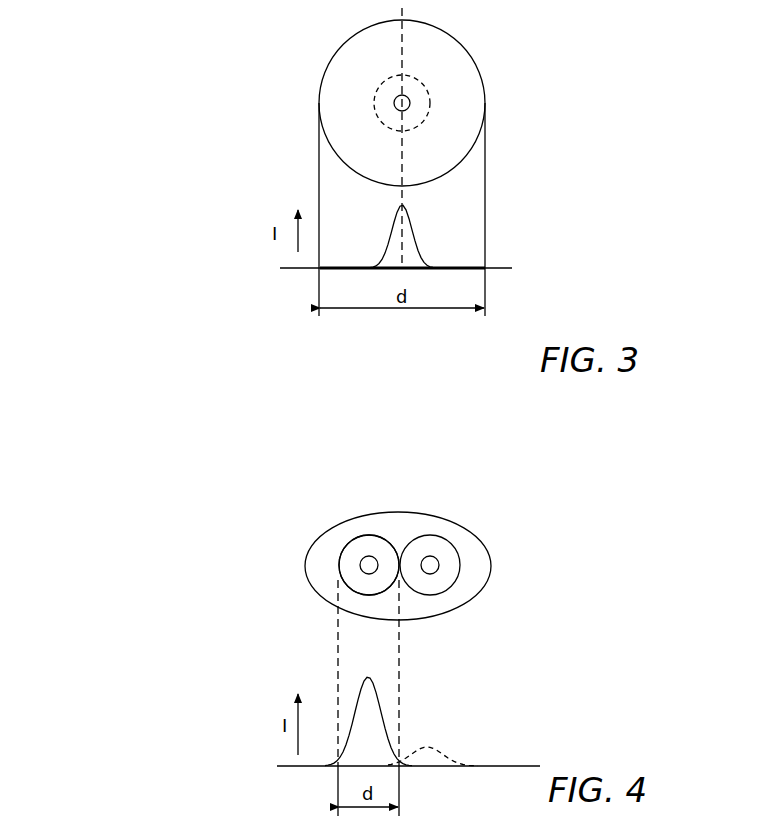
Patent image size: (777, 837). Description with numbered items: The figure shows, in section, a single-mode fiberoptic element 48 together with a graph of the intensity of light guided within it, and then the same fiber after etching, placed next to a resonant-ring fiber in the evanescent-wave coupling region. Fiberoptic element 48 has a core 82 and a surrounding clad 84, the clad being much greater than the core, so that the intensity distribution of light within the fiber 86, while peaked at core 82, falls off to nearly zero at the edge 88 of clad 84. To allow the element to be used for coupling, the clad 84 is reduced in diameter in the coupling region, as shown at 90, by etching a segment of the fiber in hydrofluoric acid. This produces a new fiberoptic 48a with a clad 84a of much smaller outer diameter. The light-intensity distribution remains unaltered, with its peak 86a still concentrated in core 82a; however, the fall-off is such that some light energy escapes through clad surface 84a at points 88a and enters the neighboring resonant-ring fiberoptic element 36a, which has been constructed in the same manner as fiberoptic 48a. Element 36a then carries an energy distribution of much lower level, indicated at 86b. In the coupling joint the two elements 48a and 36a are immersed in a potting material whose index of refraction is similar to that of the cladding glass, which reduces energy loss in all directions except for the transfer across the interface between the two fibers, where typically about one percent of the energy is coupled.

In FIG. 3, the fiberoptic element 48 is at (328, 27).
In FIG. 3, the core 82 is at (394, 104).
In FIG. 3, the clad 84 is at (320, 94).
In FIG. 3, the intensity distribution of light within the fiber 86 is at (392, 213).
In FIG. 3, the edge of clad 88 is at (323, 271).
In FIG. 3, the reduced-diameter coupling region 90 is at (431, 96).
In FIG. 4, the fiberoptic 48a is at (346, 541).
In FIG. 4, the core 82a is at (376, 557).
In FIG. 4, the clad 84a is at (340, 577).
In FIG. 4, the resonant-ring fiberoptic element 36a is at (464, 569).
In FIG. 4, the peak 86a is at (366, 678).
In FIG. 4, the energy distribution 86b is at (423, 745).
In FIG. 4, the points 88a is at (321, 766).